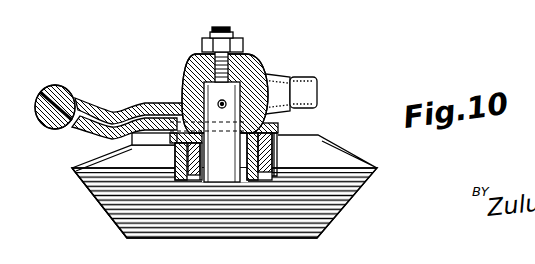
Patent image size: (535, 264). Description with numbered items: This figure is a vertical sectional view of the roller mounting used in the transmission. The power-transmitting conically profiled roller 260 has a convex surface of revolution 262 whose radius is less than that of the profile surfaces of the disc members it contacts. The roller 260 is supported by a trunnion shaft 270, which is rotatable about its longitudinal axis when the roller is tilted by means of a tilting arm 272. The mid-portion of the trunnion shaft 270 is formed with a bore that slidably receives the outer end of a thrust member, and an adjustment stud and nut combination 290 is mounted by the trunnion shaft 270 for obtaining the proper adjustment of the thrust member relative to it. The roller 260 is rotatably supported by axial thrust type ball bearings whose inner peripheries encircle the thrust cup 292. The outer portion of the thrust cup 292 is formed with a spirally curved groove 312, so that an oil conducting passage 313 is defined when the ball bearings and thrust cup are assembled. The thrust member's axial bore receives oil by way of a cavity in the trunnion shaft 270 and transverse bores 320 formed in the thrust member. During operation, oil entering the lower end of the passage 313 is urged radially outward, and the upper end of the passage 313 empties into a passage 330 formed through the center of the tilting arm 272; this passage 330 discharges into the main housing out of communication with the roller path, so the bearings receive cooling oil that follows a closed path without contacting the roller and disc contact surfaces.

The power-transmitting conically profiled roller 260 is at (352, 197).
The convex surface of revolution 262 is at (103, 212).
The trunnion shaft 270 is at (252, 77).
The tilting arm 272 is at (127, 106).
The adjustment stud and nut combination 290 is at (224, 46).
The thrust cup 292 is at (276, 131).
The spirally curved groove 312 is at (272, 160).
The oil conducting passage 313 is at (278, 160).
The transverse bore 320 is at (226, 103).
The passage 330 is at (148, 117).